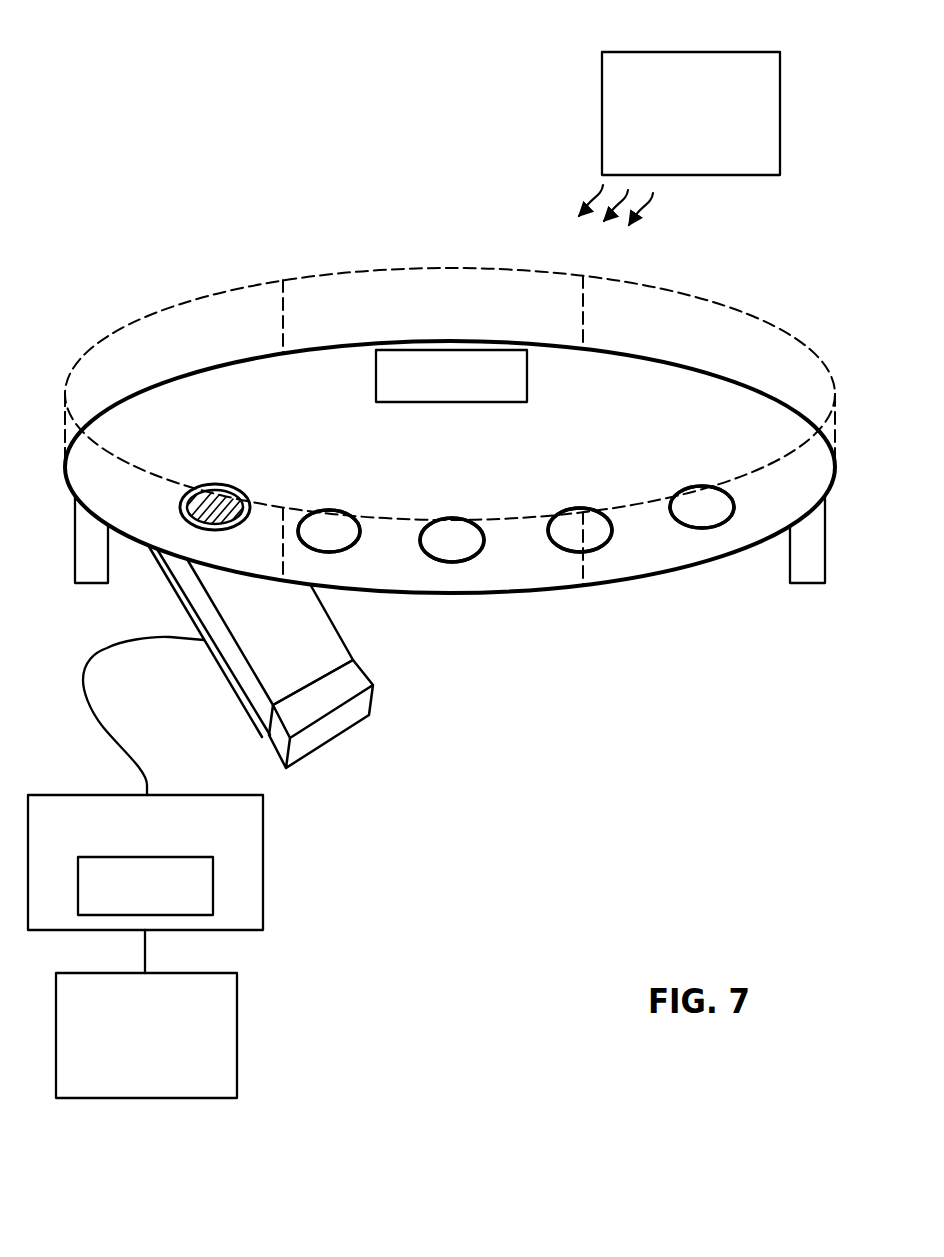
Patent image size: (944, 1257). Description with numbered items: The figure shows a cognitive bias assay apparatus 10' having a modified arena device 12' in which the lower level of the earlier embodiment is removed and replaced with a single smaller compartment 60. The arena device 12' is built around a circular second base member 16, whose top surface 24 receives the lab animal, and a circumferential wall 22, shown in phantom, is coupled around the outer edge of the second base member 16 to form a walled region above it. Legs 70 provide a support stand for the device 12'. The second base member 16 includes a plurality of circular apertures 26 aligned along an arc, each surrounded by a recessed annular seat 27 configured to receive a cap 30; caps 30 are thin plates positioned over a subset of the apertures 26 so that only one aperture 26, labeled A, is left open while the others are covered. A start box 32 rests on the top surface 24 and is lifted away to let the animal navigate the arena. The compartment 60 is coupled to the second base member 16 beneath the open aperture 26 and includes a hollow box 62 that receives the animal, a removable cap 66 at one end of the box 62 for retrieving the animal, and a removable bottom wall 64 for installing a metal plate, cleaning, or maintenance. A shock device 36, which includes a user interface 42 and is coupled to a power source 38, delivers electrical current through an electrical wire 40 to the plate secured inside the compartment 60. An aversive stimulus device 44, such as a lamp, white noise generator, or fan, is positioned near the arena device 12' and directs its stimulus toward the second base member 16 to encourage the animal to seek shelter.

The cognitive bias assay apparatus 10' is at (102, 33).
The arena device 12' is at (420, 394).
The second base member 16 is at (655, 356).
The circumferential wall 22 is at (67, 413).
The top surface 24 is at (733, 408).
The apertures 26 is at (230, 523).
The recessed annular seat 27 is at (183, 517).
The caps 30 is at (342, 523).
The start box 32 is at (528, 375).
The shock device 36 is at (200, 796).
The power source 38 is at (200, 973).
The electrical wire 40 is at (88, 727).
The user interface 42 is at (213, 887).
The aversive stimulus device 44 is at (740, 52).
The compartment 60 is at (190, 674).
The hollow box 62 is at (333, 645).
The removable bottom wall 64 is at (170, 585).
The removable cap 66 is at (372, 692).
The legs 70 is at (56, 548).